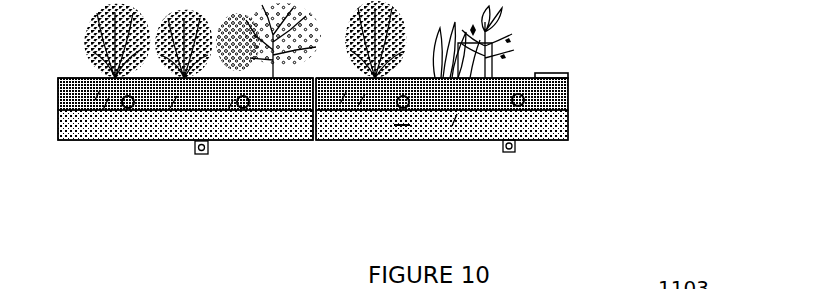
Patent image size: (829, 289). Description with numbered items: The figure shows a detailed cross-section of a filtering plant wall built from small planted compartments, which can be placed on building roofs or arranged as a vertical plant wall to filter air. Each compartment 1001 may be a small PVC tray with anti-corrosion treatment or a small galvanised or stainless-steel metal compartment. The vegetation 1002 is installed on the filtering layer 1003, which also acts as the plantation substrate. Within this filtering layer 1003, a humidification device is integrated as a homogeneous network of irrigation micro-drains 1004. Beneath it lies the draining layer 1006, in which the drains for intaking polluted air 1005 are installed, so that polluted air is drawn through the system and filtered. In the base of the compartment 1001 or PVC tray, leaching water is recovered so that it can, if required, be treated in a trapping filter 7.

The compartment 1001 is at (103, 141).
The vegetation 1002 is at (492, 57).
The filtering layer 1003 is at (535, 73).
The irrigation micro-drains 1004 is at (568, 93).
The drains for intaking polluted air 1005 is at (552, 125).
The draining layer 1006 is at (402, 124).
The trapping filter 7 is at (515, 148).